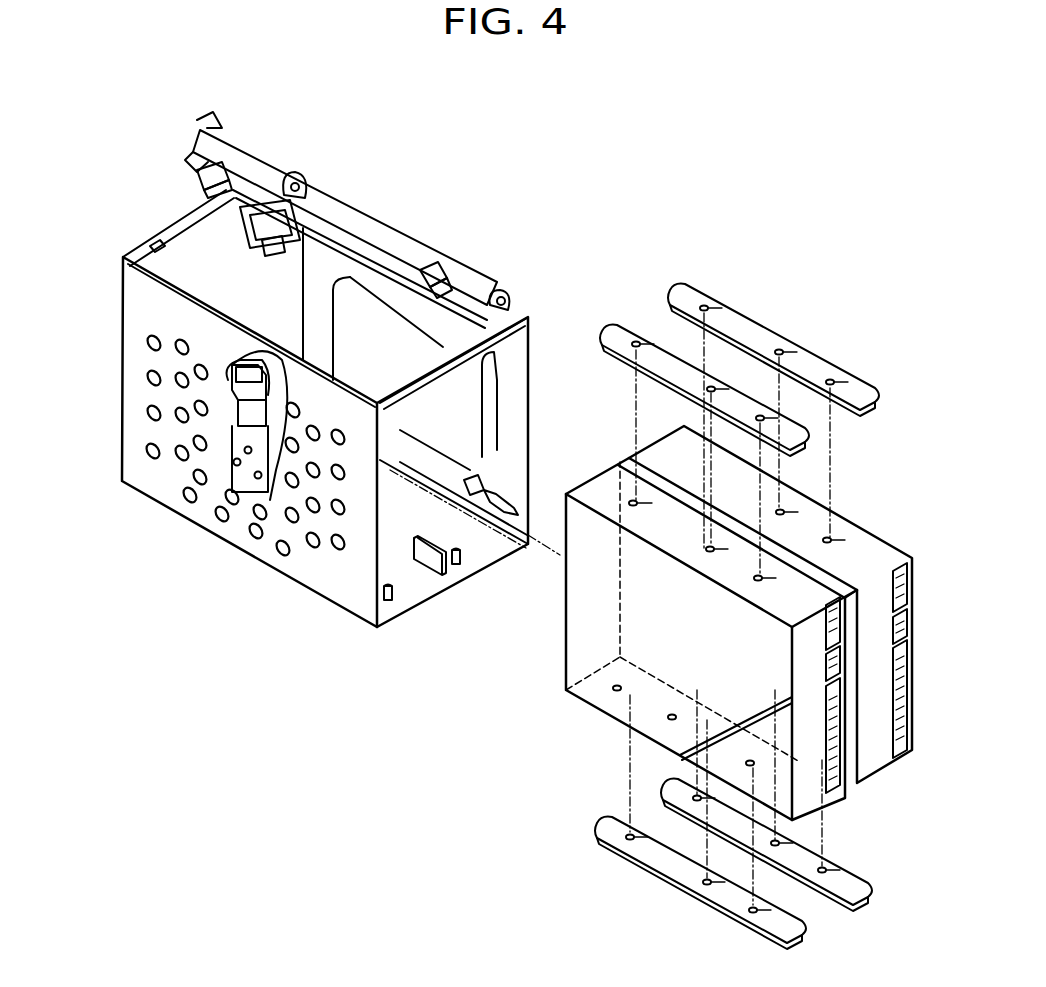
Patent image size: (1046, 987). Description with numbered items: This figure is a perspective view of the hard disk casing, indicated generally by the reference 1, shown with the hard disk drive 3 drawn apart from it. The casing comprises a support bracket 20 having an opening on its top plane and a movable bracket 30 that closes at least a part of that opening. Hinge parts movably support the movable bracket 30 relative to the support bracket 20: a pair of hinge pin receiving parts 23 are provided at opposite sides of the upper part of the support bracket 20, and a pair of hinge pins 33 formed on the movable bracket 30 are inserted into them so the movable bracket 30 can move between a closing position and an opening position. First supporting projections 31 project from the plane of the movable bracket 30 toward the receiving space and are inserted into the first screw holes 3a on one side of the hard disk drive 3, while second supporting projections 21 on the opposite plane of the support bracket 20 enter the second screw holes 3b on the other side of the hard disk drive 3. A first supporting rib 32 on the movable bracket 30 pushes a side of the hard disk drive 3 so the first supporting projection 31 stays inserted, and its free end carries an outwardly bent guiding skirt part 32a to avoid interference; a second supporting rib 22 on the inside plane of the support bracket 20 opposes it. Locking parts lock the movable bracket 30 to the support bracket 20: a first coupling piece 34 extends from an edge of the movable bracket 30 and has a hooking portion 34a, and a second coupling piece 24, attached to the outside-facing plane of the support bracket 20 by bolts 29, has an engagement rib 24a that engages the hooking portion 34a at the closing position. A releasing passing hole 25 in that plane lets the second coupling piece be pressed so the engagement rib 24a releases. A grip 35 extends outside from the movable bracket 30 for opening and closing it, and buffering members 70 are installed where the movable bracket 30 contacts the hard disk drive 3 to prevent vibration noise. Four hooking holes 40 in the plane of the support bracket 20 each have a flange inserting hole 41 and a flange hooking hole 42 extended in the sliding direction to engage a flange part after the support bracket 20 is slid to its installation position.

The module mounting assembly 1 is at (305, 617).
The hard disk drive 3 is at (785, 608).
The first screw holes 3a is at (758, 578).
The second screw holes 3b is at (750, 765).
The support bracket 20 is at (160, 317).
The second supporting projection 21 is at (395, 600).
The second supporting rib 22 is at (433, 567).
The hinge pin receiving parts 23 is at (299, 183).
The second coupling piece 24 is at (237, 404).
The engagement rib 24a is at (232, 382).
The releasing passing hole 25 is at (276, 487).
The bolts 29 is at (262, 452).
The movable bracket 30 is at (355, 245).
The first supporting projection 31 is at (215, 202).
The first supporting rib 32 is at (195, 178).
The guiding skirt part 32a is at (208, 192).
The hinge pins 33 is at (305, 185).
The first coupling piece 34 is at (332, 222).
The hooking portion 34a is at (262, 247).
The grip 35 is at (233, 163).
The hooking holes 40 is at (580, 430).
The flange inserting hole 41 is at (512, 500).
The flange hooking hole 42 is at (485, 480).
The buffering member 70 is at (620, 335).